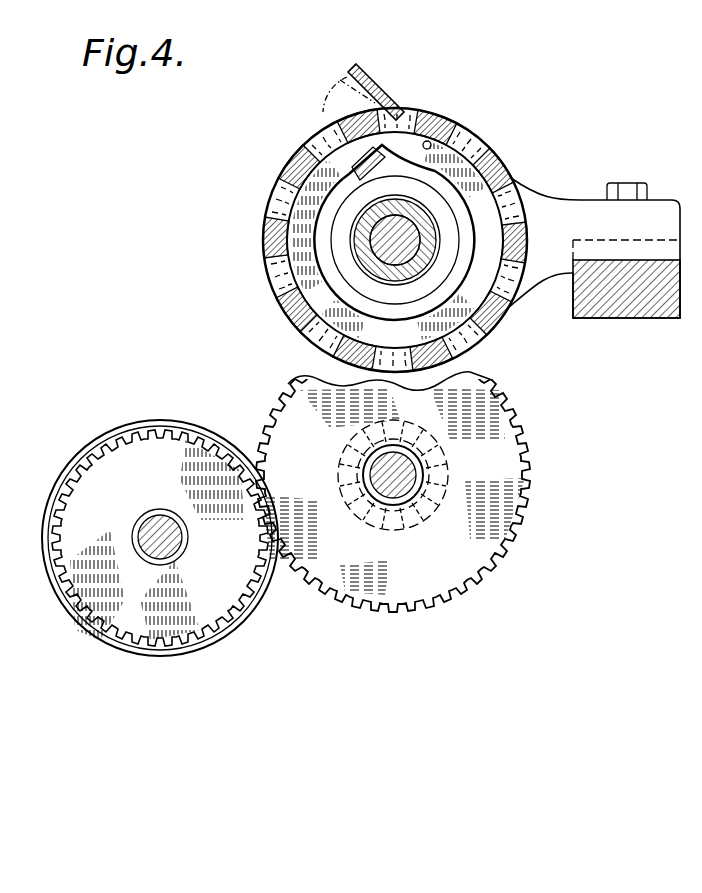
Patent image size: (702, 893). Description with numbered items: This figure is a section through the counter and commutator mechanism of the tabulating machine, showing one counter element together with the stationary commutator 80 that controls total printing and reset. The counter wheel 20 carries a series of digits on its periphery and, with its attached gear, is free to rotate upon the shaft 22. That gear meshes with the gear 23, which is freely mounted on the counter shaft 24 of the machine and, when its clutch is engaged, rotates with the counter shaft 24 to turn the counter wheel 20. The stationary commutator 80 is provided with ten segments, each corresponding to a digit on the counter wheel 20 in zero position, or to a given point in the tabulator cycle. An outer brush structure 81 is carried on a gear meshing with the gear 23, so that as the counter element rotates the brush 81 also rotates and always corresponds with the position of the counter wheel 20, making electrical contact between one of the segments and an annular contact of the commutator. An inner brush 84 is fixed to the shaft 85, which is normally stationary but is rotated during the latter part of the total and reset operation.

The counter wheel 20 is at (205, 645).
The shaft 22 is at (173, 553).
The gear 23 is at (490, 498).
The counter shaft 24 is at (403, 470).
The stationary commutator 80 is at (470, 150).
The outer brush structure 81 is at (388, 100).
The inner brush 84 is at (393, 137).
The shaft 85 is at (437, 222).